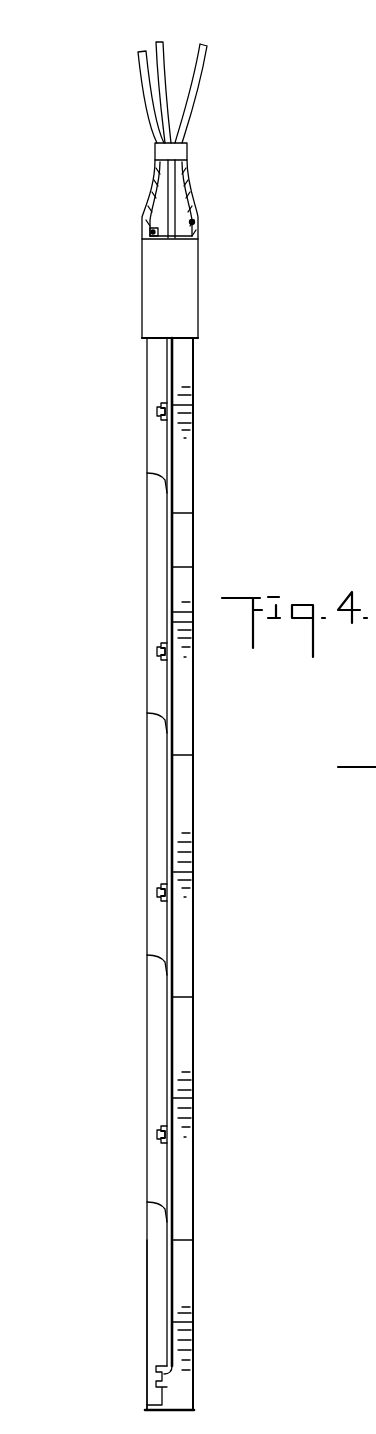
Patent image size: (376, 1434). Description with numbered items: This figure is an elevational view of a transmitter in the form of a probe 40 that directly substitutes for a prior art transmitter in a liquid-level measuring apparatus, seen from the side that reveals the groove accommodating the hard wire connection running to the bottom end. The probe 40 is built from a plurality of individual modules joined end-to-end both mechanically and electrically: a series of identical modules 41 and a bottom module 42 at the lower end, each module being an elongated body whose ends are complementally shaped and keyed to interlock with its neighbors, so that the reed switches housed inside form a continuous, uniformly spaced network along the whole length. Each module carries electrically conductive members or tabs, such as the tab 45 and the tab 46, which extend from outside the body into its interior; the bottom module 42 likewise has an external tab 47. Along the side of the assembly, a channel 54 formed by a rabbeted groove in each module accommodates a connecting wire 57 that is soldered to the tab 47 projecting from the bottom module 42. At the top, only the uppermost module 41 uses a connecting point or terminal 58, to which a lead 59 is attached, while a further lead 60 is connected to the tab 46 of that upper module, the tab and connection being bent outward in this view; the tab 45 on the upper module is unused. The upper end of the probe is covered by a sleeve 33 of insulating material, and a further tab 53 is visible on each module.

The sleeve 33 is at (192, 302).
The probe 40 is at (100, 570).
The module 41 is at (160, 370).
The bottom module 42 is at (155, 1292).
The tab 45 is at (157, 411).
The tab 46 is at (198, 216).
The tab 47 is at (156, 1378).
The tab 53 is at (162, 422).
The channel 54 is at (188, 485).
The connecting wire 57 is at (160, 43).
The terminal 58 is at (150, 233).
The lead 59 is at (148, 92).
The lead 60 is at (196, 72).